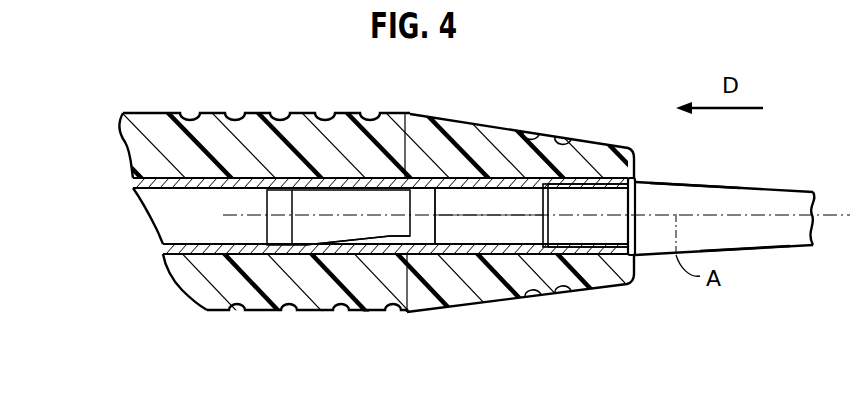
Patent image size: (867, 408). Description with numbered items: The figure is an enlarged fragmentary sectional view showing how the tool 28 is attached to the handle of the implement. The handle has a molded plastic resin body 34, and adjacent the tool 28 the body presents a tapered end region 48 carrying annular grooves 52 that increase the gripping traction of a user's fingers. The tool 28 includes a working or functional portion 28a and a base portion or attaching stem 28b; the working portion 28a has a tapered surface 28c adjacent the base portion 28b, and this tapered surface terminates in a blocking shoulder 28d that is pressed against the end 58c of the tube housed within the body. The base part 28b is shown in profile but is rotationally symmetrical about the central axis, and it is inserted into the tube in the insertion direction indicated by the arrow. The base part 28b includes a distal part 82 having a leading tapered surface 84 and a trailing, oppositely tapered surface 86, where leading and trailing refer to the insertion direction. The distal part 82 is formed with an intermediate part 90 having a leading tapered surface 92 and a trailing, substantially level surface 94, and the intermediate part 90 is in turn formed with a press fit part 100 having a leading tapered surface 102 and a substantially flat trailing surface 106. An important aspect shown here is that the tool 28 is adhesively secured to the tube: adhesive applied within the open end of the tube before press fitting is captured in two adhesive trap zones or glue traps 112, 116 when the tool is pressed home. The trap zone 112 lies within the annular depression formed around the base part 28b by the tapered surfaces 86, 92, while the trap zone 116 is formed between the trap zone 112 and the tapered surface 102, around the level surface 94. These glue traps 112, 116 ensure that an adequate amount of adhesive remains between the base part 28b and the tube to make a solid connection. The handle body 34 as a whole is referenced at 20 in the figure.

The connector body 20 is at (497, 116).
The body 34 is at (310, 110).
The tapered end region 48 is at (420, 313).
The annular grooves 52 is at (538, 138).
The end of the tube 58c is at (637, 257).
The distal part 82 is at (314, 205).
The leading tapered surface 84 is at (268, 116).
The trailing tapered surface 86 is at (388, 243).
The intermediate part 90 is at (446, 282).
The leading tapered surface 92 is at (410, 190).
The level surface 94 is at (466, 167).
The press fit part 100 is at (560, 255).
The leading tapered surface 102 is at (468, 220).
The trailing surface 106 is at (607, 257).
The adhesive trap zone 112 is at (345, 262).
The adhesive trap zone 116 is at (421, 282).
The tool 28 is at (766, 184).
The working portion 28a is at (753, 254).
The base portion 28b is at (555, 195).
The tapered surface 28c is at (690, 182).
The blocking shoulder 28d is at (613, 197).